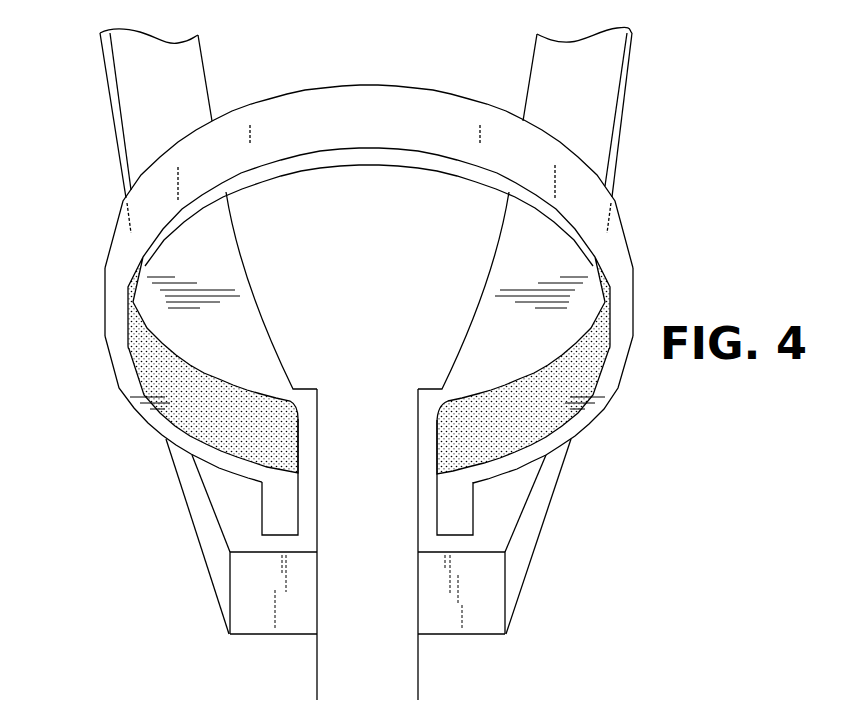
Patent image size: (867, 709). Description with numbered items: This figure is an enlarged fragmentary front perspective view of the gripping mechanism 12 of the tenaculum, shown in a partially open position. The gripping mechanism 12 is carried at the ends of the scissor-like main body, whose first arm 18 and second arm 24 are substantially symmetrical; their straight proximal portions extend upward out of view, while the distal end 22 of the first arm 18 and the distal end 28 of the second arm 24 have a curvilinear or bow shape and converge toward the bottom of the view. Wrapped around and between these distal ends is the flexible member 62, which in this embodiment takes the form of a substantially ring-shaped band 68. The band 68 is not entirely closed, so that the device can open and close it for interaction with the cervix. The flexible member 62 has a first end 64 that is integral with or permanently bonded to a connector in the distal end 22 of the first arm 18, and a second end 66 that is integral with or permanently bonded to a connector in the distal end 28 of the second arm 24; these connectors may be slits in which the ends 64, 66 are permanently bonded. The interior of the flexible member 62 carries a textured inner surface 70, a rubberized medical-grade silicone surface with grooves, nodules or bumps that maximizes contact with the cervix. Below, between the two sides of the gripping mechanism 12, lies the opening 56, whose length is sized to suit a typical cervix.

The gripping mechanism 12 is at (80, 294).
The first arm 18 is at (165, 85).
The second arm 24 is at (580, 97).
The distal end of the first arm 22 is at (195, 504).
The distal end of the second arm 28 is at (500, 492).
The flexible member 62 is at (636, 187).
The substantially ring-shaped band 68 is at (381, 112).
The textured inner surface 70 is at (155, 376).
The first end of the flexible member 64 is at (262, 535).
The second end of the flexible member 66 is at (437, 535).
The opening 56 is at (418, 687).